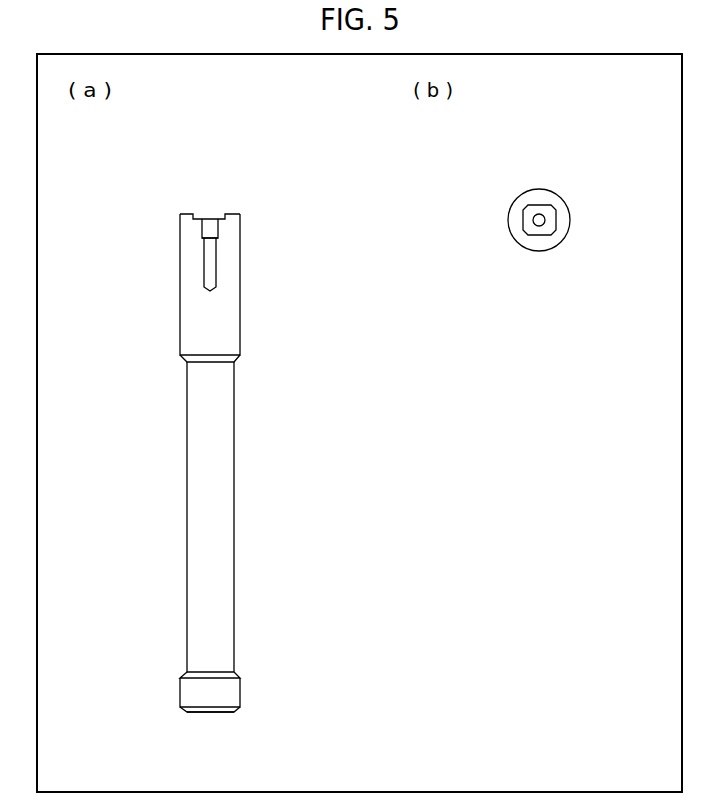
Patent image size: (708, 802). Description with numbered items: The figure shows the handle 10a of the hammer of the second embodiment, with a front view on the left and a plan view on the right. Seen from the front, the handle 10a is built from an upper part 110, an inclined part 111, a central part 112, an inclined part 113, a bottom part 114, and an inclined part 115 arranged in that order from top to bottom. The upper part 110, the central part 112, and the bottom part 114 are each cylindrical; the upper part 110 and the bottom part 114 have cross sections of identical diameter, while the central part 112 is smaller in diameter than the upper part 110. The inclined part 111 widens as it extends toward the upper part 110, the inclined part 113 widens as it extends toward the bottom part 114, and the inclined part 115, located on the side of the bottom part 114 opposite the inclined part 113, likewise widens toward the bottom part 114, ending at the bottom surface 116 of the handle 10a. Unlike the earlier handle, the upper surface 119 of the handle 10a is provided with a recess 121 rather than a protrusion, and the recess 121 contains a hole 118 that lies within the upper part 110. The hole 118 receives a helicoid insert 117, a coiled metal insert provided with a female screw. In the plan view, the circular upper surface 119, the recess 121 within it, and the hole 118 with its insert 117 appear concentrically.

The handle 10a is at (384, 440).
The upper part 110 is at (180, 318).
The inclined part 111 is at (236, 359).
The central part 112 is at (226, 522).
The inclined part 113 is at (238, 676).
The bottom part 114 is at (243, 692).
The inclined part 115 is at (238, 710).
The bottom surface 116 is at (212, 713).
The helicoid insert 117 is at (221, 229).
The hole 118 is at (217, 270).
The upper surface 119 is at (186, 214).
The recess 121 is at (226, 213).